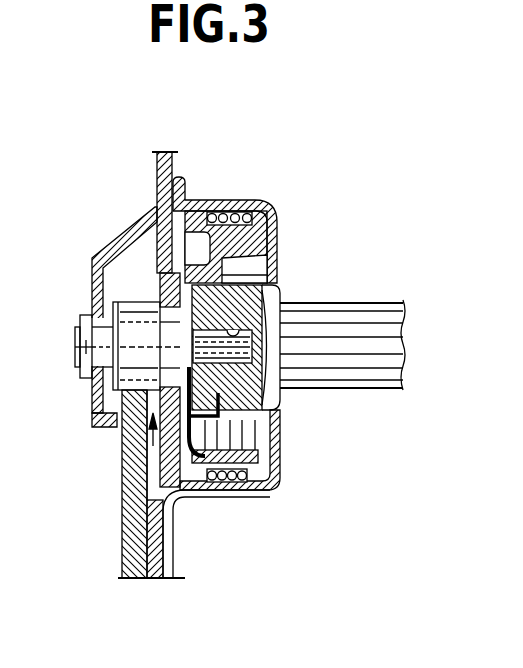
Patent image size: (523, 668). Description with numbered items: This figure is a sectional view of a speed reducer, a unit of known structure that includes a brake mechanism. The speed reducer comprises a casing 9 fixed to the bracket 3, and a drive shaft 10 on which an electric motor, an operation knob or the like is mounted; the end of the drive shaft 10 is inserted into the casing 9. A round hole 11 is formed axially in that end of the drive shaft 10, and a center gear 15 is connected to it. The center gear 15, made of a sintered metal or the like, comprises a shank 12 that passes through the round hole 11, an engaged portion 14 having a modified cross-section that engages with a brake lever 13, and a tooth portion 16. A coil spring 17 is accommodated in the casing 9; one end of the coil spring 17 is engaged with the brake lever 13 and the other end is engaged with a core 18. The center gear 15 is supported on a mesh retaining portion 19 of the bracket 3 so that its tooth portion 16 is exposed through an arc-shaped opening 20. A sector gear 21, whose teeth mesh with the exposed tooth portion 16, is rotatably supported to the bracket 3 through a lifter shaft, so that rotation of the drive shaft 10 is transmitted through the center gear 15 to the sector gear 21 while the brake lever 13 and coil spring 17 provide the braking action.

The bracket 3 is at (157, 565).
The casing 9 is at (273, 239).
The drive shaft 10 is at (370, 375).
The round hole 11 is at (234, 336).
The shank 12 is at (280, 394).
The brake lever 13 is at (190, 470).
The engaged portion 14 is at (138, 434).
The center gear 15 is at (138, 301).
The tooth portion 16 is at (92, 394).
The coil spring 17 is at (233, 483).
The core 18 is at (263, 212).
The mesh retaining portion 19 is at (92, 300).
The arc-shaped opening 20 is at (141, 478).
The sector gear 21 is at (139, 565).